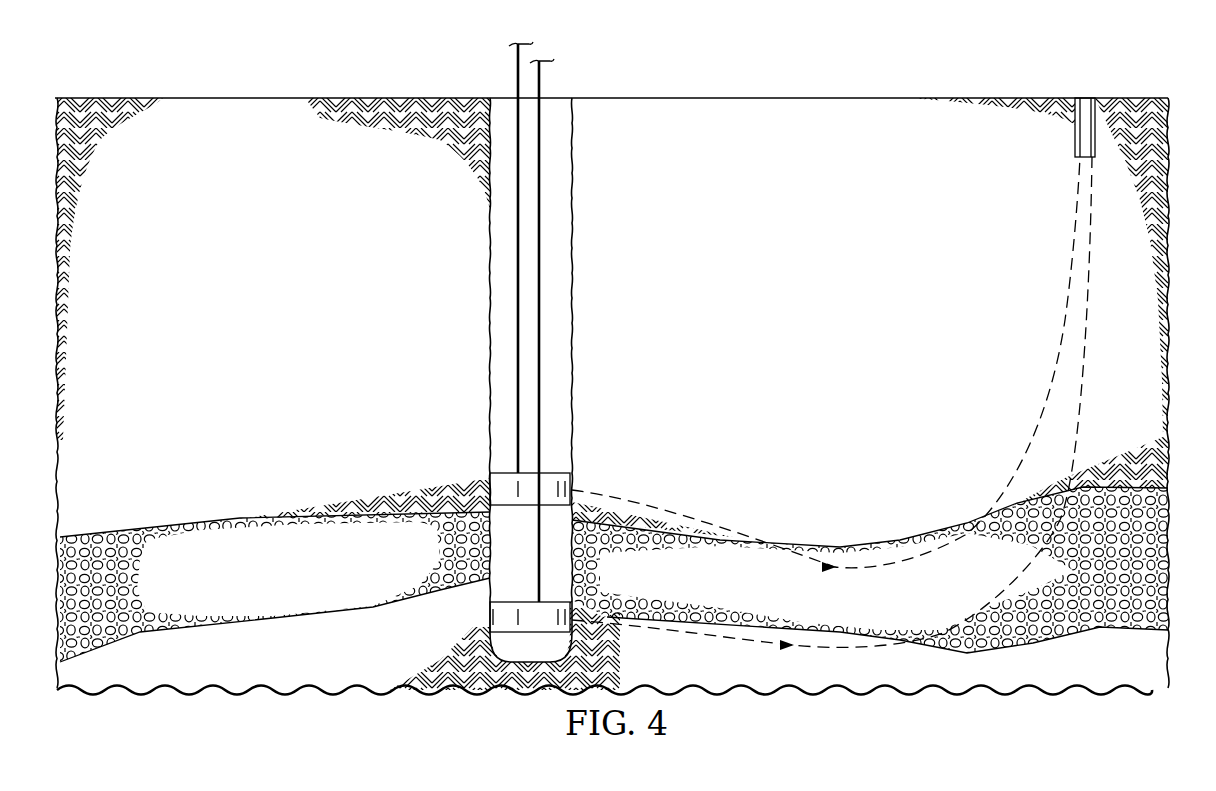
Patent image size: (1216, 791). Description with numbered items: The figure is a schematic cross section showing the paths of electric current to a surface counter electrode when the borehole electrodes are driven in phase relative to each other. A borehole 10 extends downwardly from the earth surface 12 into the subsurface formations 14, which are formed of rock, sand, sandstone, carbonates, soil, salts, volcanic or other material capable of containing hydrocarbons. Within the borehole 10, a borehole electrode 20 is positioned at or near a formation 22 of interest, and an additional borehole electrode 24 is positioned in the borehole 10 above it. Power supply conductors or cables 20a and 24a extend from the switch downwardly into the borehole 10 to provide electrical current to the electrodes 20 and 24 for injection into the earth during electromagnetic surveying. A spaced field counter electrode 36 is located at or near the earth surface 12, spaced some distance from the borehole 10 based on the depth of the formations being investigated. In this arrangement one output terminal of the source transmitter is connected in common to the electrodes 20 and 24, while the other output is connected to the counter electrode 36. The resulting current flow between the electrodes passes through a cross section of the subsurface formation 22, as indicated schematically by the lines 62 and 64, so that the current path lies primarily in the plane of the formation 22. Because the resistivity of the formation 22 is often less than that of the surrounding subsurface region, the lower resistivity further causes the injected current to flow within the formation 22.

The borehole 10 is at (574, 255).
The earth surface 12 is at (827, 98).
The subsurface formations 14 is at (285, 318).
The borehole electrode 20 is at (490, 601).
The power supply conductor or cable 20a is at (540, 340).
The formation of interest 22 is at (297, 582).
The additional borehole electrode 24 is at (555, 473).
The power supply conductor or cable 24a is at (518, 303).
The spaced field counter electrode 36 is at (1075, 138).
The current path line 62 is at (1047, 407).
The current path line 64 is at (1085, 408).